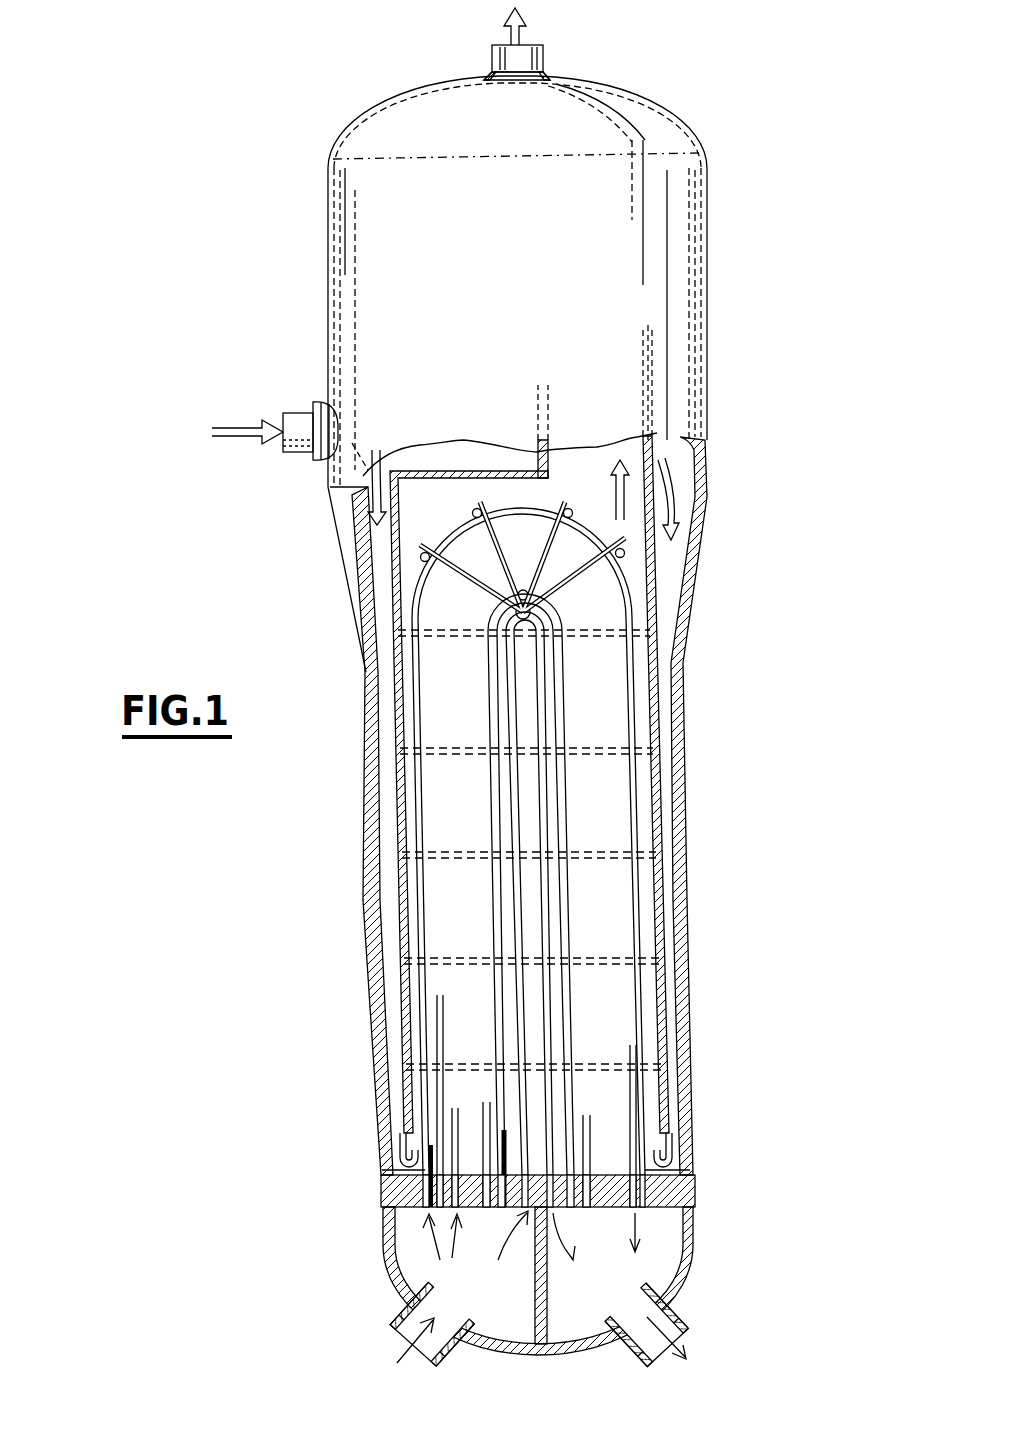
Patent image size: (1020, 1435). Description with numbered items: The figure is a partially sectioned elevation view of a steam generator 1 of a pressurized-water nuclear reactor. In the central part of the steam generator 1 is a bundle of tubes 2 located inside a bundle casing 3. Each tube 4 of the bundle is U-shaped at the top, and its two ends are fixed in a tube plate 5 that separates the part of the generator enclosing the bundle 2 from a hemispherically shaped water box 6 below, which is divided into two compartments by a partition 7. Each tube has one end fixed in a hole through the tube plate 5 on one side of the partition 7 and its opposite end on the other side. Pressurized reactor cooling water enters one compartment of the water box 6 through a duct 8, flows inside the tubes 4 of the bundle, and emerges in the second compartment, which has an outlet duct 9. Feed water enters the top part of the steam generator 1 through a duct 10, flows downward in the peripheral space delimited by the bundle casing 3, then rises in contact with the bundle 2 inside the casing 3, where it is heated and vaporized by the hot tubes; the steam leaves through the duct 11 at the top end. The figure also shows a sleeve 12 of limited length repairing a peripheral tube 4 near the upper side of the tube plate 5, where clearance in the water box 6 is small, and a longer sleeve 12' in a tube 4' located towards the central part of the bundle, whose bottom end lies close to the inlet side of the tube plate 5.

The steam generator 1 is at (692, 646).
The bundle of tubes 2 is at (648, 790).
The bundle casing 3 is at (653, 713).
The tube 4 is at (623, 884).
The tube 4' is at (639, 893).
The tube plate 5 is at (680, 1191).
The water box 6 is at (410, 1240).
The partition 7 is at (547, 1305).
The duct 8 is at (410, 1320).
The outlet duct 9 is at (668, 1320).
The duct 10 is at (292, 410).
The duct 11 is at (505, 45).
The sleeve 12 is at (499, 1150).
The sleeve 12' is at (470, 1101).